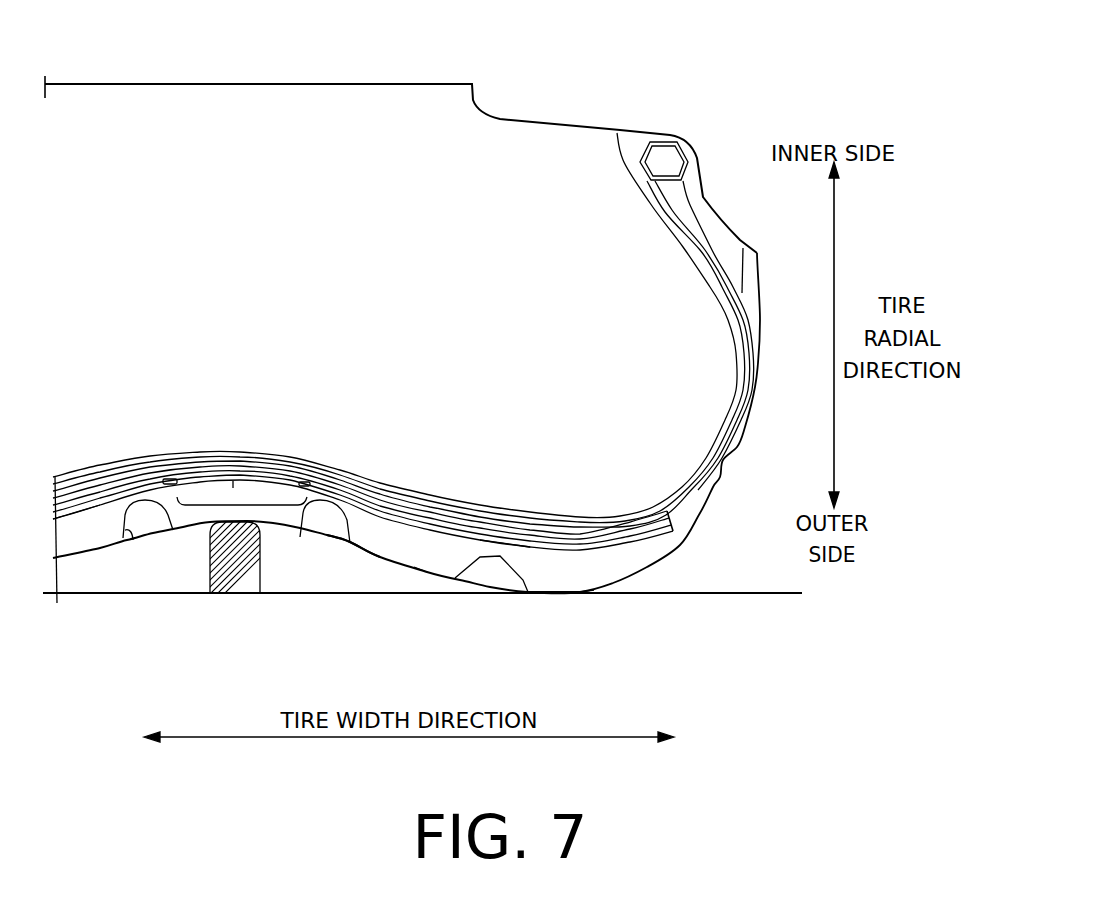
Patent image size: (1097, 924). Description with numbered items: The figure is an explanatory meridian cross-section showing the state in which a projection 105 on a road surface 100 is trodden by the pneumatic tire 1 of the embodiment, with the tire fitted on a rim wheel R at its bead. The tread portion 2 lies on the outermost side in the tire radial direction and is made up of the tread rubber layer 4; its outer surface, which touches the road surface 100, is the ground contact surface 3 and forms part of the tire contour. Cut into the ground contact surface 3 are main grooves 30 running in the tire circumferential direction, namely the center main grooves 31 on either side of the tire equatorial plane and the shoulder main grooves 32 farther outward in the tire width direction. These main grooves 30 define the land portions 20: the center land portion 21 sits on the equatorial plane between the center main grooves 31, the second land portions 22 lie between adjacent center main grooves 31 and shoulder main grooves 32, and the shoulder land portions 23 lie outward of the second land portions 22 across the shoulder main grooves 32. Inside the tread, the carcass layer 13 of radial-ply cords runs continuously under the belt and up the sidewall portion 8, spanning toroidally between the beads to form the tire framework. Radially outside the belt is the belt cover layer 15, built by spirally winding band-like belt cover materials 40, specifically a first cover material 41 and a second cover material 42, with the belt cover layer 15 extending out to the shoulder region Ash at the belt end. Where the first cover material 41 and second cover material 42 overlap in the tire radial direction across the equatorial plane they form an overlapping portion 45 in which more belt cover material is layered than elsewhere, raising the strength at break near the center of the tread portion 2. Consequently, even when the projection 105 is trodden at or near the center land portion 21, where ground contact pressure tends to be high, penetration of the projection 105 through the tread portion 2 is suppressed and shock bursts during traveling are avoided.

The pneumatic tire 1 is at (722, 58).
The tread portion 2 is at (388, 540).
The ground contact surface 3 is at (368, 545).
The tread rubber layer 4 is at (553, 570).
The sidewall portion 8 is at (758, 382).
The carcass layer 13 is at (722, 437).
The belt cover layer 15 is at (615, 562).
The land portions 20 is at (392, 583).
The center land portion 21 is at (280, 510).
The second land portion 22 is at (420, 540).
The shoulder land portion 23 is at (590, 565).
The main grooves 30 is at (330, 596).
The center main groove 31 is at (130, 525).
The shoulder main groove 32 is at (510, 565).
The belt cover material 40 is at (363, 588).
The first cover material 41 is at (490, 540).
The second cover material 42 is at (77, 520).
The overlapping portion 45 is at (195, 570).
The road surface 100 is at (772, 592).
The projection 105 is at (196, 500).
The rim wheel R is at (703, 197).
The shoulder region Ash is at (652, 508).